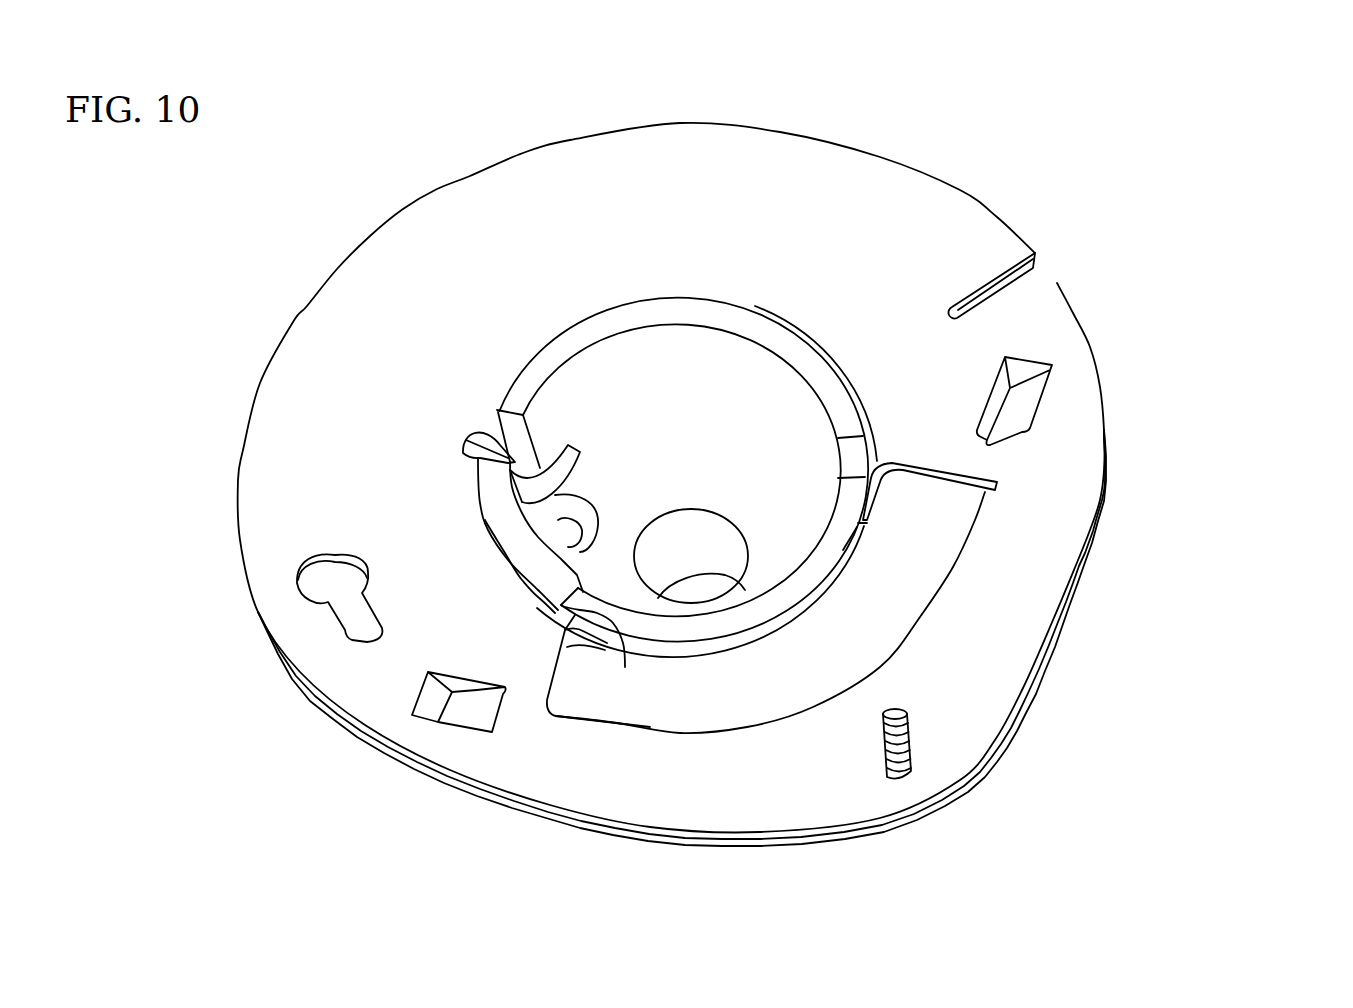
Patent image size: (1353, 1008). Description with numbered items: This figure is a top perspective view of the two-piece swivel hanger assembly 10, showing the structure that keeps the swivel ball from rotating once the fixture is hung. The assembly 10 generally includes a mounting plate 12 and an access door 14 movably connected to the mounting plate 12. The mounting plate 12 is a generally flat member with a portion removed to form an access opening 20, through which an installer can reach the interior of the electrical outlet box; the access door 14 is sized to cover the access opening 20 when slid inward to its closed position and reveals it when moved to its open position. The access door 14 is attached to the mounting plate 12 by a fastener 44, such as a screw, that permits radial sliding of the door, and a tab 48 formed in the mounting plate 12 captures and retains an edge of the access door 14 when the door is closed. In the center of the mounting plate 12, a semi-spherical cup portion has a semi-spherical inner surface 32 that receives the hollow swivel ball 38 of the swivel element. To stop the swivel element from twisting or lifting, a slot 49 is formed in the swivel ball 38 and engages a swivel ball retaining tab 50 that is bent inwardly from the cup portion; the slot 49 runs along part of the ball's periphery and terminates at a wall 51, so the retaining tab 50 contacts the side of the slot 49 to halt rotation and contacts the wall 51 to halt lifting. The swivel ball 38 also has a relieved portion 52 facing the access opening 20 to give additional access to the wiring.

The two-piece swivel hanger assembly 10 is at (1232, 137).
The mounting plate 12 is at (943, 175).
The access door 14 is at (910, 593).
The access opening 20 is at (982, 540).
The semi-spherical inner surface 32 is at (790, 322).
The swivel ball 38 is at (663, 312).
The fastener 44 is at (900, 777).
The tab 48 is at (1013, 423).
The slot 49 is at (512, 420).
The swivel ball retaining tab 50 is at (455, 580).
The wall 51 is at (520, 573).
The relieved portion 52 is at (625, 667).